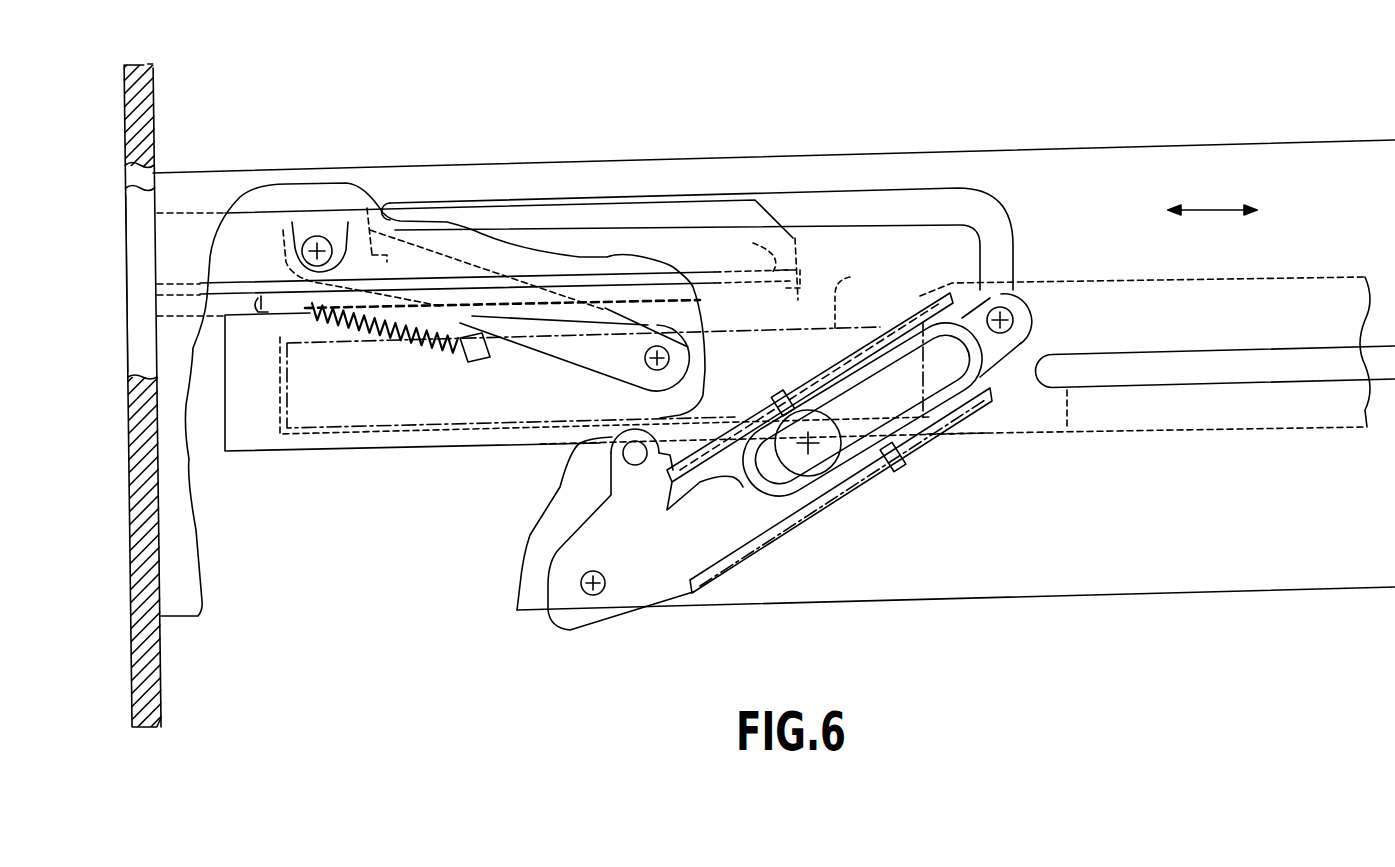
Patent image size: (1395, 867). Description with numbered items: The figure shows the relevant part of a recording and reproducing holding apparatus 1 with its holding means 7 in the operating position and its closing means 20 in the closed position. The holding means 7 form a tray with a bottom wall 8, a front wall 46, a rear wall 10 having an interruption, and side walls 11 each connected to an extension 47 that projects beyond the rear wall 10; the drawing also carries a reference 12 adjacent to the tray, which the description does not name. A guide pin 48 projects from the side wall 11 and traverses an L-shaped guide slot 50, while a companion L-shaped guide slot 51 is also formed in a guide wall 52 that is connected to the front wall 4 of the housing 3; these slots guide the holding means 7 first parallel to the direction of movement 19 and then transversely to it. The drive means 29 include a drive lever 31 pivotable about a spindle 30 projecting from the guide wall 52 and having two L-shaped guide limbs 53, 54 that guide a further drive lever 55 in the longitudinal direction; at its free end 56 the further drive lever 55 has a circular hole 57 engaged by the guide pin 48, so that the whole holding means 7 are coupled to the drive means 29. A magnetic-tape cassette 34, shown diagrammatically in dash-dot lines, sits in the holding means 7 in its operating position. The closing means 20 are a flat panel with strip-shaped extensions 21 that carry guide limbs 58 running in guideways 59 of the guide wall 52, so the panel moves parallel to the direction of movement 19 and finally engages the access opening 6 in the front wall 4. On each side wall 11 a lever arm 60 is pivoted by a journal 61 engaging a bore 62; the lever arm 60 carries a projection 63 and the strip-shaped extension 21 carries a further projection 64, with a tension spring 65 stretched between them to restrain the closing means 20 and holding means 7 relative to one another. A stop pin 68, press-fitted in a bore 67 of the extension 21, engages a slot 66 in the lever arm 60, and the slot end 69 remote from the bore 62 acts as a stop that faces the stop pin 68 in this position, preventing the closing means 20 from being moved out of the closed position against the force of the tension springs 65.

The holding apparatus 1 is at (1279, 610).
The housing 3 is at (159, 617).
The front wall 4 is at (160, 690).
The access opening 6 is at (154, 193).
The holding means 7 is at (361, 449).
The bottom wall 8 is at (427, 441).
The rear wall 10 is at (955, 365).
The side wall 11 is at (490, 398).
The cover plate 12 is at (542, 400).
The direction of movement 19 is at (1207, 207).
The closing means 20 is at (140, 230).
The strip-shaped extension 21 is at (742, 208).
The drive means 29 is at (878, 543).
The spindle 30 is at (593, 595).
The drive lever 31 is at (660, 578).
The magnetic-tape cassette 34 is at (854, 299).
The front wall 46 is at (266, 398).
The extension 47 is at (1322, 277).
The guide pin 48 is at (1017, 297).
The guide slot 50 is at (810, 186).
The guide slot 51 is at (1240, 355).
The guide wall 52 is at (1330, 157).
The guide limb 53 is at (772, 390).
The guide limb 54 is at (877, 463).
The further drive lever 55 is at (983, 383).
The free end 56 is at (1030, 307).
The circular hole 57 is at (1030, 338).
The guide limb 58 is at (752, 252).
The guideway 59 is at (807, 277).
The lever arm 60 is at (447, 257).
The journal 61 is at (650, 368).
The bore 62 is at (647, 355).
The projection 63 is at (473, 372).
The further projection 64 is at (270, 320).
The tension spring 65 is at (410, 352).
The slot 66 is at (367, 208).
The bore 67 is at (348, 222).
The stop pin 68 is at (313, 236).
The end 69 is at (292, 222).